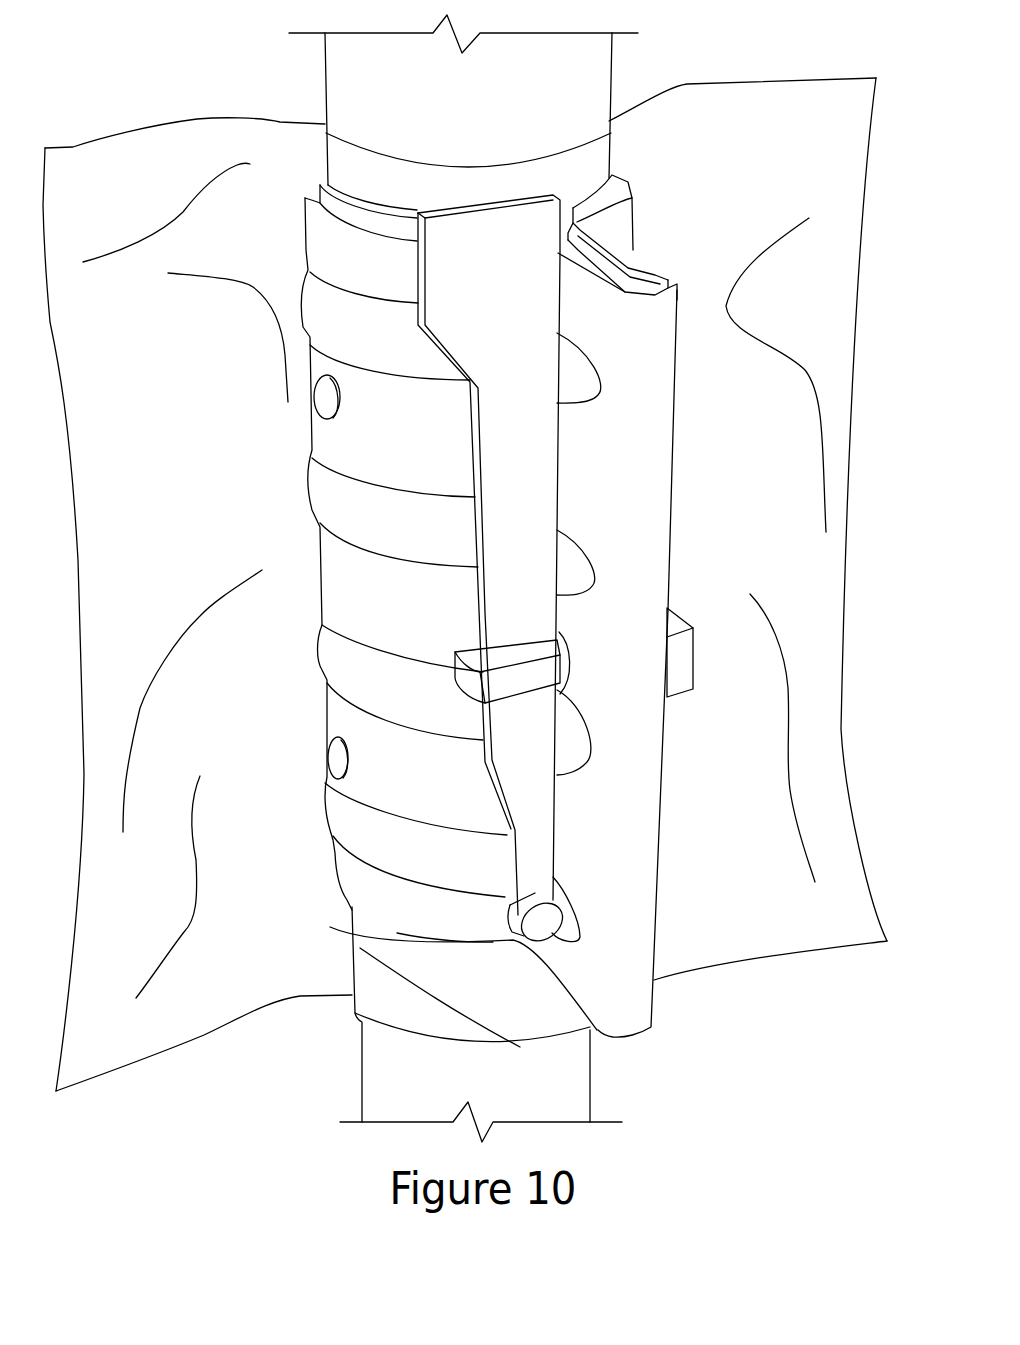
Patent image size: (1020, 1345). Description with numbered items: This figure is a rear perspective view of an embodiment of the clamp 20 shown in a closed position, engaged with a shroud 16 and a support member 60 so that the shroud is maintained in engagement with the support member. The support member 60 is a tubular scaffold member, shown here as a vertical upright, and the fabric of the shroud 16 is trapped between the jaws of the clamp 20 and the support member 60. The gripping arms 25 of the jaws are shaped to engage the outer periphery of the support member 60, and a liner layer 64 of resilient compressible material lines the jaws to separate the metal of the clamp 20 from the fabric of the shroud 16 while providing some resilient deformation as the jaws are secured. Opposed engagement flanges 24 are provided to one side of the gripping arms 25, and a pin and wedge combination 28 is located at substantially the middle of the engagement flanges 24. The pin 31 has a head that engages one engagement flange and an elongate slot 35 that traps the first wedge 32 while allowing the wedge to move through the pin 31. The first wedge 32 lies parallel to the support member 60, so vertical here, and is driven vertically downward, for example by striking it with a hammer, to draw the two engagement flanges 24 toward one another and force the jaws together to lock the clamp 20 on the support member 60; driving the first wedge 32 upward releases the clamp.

The shroud 16 is at (167, 1020).
The clamp 20 is at (741, 760).
The engagement flanges 24 is at (657, 280).
The gripping arms 25 is at (617, 236).
The pin and wedge combination 28 is at (437, 662).
The pin 31 is at (683, 616).
The first wedge 32 is at (470, 305).
The elongate slot 35 is at (557, 643).
The support member 60 is at (375, 127).
The liner layer 64 is at (604, 203).